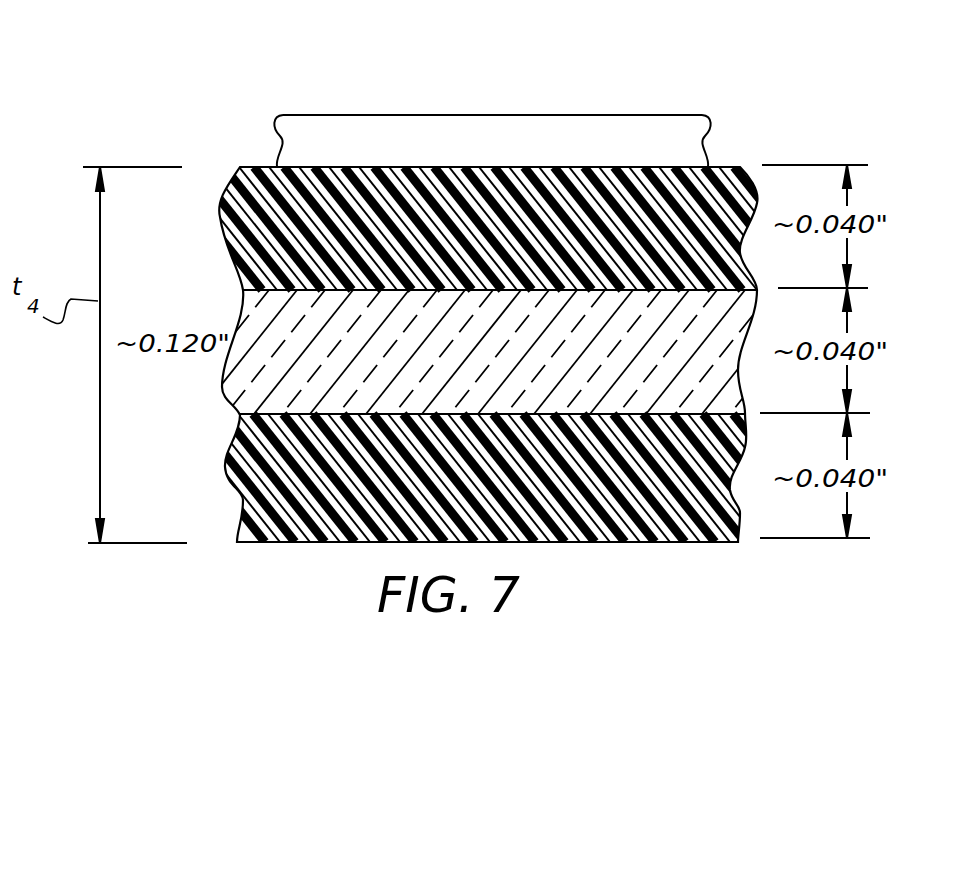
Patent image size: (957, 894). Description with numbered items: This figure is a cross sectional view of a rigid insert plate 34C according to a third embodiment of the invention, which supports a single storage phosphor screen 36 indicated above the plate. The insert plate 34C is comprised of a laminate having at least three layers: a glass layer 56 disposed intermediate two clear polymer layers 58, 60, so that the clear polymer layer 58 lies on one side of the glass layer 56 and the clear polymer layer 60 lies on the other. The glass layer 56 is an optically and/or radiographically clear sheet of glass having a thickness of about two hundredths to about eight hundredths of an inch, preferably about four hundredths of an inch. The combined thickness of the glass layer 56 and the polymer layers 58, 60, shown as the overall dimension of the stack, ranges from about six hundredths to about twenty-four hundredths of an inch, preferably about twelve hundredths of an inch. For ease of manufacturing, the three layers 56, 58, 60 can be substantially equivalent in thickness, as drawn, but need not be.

The insert plate 34C is at (150, 118).
The storage phosphor screen 36 is at (628, 113).
The clear polymer layer 58 is at (328, 182).
The glass layer 56 is at (268, 306).
The clear polymer layer 60 is at (660, 542).